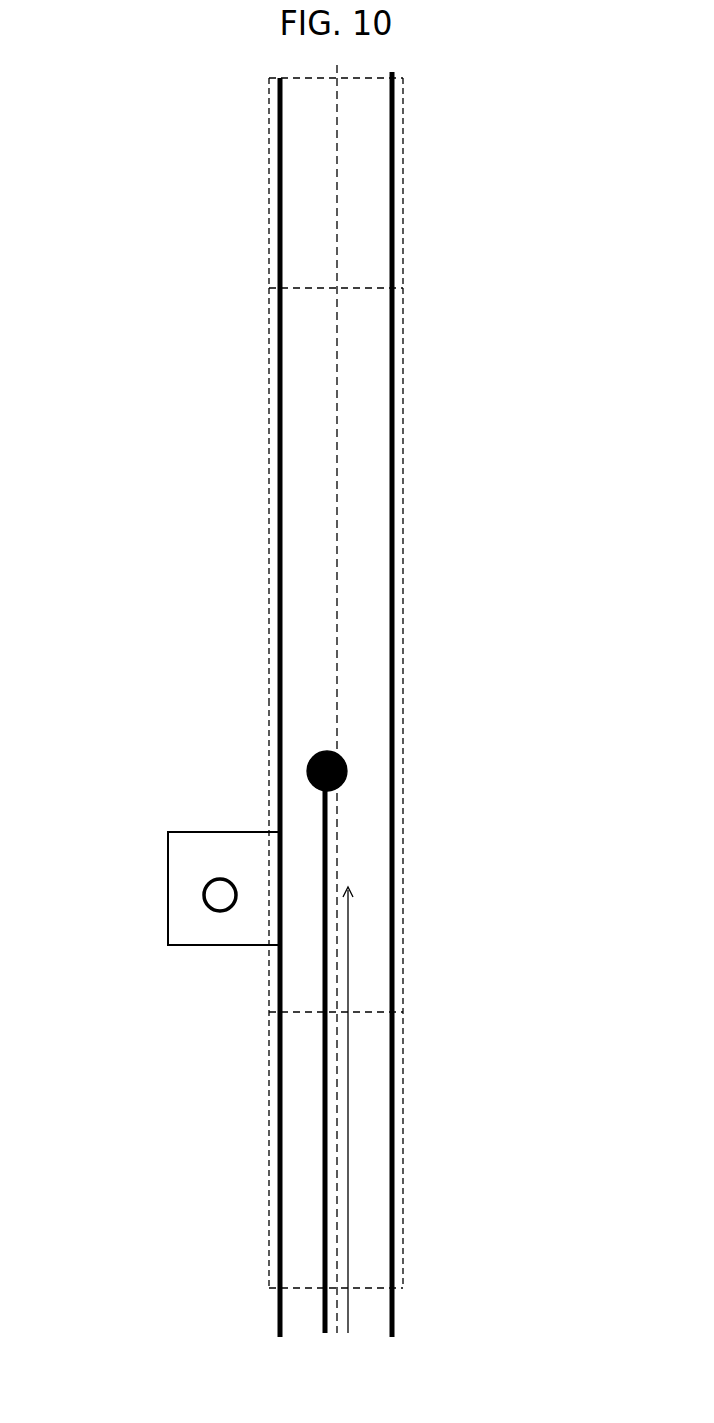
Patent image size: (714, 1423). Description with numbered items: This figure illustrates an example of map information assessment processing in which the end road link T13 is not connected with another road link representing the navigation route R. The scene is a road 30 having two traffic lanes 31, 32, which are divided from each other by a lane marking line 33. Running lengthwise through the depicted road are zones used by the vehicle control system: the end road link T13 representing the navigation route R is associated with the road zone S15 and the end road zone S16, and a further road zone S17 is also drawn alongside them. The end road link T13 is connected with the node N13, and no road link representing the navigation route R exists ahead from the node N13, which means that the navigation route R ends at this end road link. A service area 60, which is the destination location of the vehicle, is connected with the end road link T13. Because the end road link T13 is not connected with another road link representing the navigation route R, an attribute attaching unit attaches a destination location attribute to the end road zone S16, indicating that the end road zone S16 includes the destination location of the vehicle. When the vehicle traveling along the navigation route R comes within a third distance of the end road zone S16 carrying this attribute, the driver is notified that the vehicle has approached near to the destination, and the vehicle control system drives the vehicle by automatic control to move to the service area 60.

The road 30 is at (395, 100).
The traffic lane 31 is at (322, 129).
The traffic lane 32 is at (380, 129).
The lane marking line 33 is at (337, 380).
The road zone S15 is at (268, 1148).
The end road zone S16 is at (268, 665).
The third side surface S17 is at (404, 184).
The node N13 is at (306, 766).
The end road link T13 is at (327, 1088).
The navigation route R is at (349, 1130).
The service area 60 is at (180, 845).